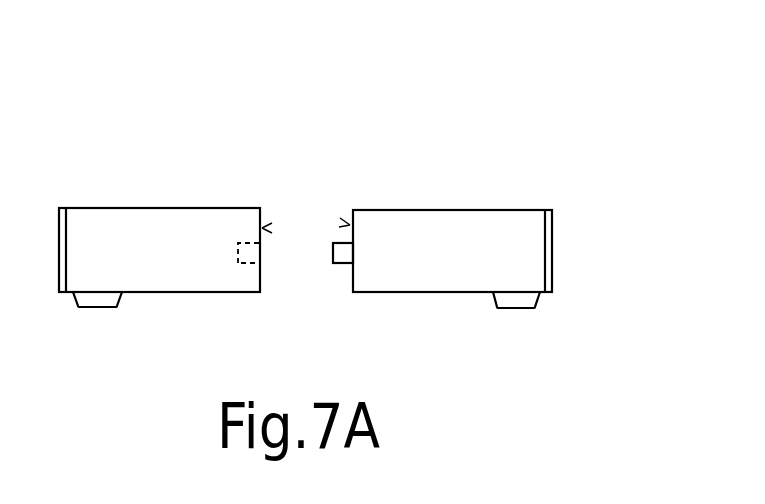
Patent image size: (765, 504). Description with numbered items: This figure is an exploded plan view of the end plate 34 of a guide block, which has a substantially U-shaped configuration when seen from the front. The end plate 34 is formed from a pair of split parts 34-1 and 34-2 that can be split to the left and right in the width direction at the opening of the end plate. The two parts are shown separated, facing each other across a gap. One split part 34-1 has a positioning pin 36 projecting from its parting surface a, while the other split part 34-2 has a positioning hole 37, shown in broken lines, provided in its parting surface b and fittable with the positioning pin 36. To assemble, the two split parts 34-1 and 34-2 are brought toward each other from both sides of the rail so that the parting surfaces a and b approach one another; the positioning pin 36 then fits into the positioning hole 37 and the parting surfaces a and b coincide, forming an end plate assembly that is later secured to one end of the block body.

The end plate 34 is at (329, 132).
The split part 34-1 is at (453, 275).
The split part 34-2 is at (163, 267).
The positioning pin 36 is at (340, 257).
The positioning hole 37 is at (248, 245).
The parting surface a is at (350, 225).
The parting surface b is at (262, 228).